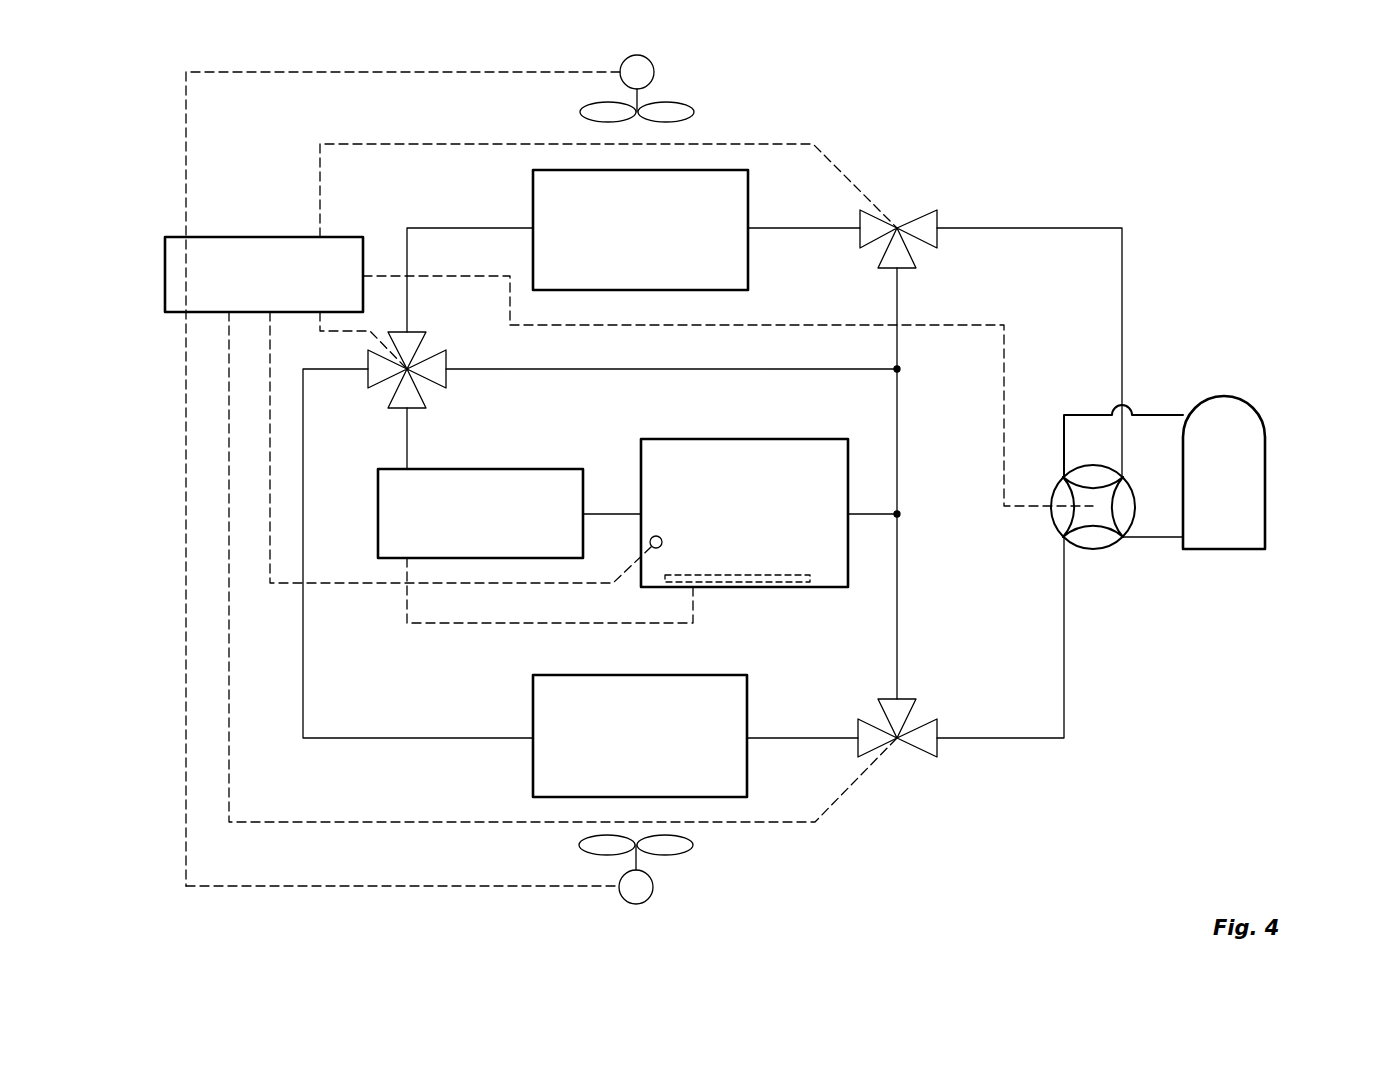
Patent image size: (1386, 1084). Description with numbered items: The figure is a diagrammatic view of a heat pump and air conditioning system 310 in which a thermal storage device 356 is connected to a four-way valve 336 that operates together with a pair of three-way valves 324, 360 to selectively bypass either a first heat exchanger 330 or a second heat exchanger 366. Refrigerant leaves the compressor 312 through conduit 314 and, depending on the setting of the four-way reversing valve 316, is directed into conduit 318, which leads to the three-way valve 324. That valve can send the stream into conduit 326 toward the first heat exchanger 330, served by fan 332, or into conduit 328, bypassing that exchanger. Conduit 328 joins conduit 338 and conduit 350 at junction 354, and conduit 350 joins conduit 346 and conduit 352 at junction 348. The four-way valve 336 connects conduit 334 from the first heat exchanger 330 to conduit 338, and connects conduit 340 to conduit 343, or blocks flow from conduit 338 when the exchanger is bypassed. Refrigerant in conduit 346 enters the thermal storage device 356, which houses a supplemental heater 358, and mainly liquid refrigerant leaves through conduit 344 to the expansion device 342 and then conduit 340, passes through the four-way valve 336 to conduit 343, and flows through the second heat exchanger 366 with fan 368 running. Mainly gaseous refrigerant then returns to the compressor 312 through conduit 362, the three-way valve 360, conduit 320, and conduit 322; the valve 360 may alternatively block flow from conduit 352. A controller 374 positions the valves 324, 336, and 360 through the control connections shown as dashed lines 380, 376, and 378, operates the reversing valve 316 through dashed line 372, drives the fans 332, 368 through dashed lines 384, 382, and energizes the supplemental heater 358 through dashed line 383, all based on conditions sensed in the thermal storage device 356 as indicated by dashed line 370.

The system 310 is at (1106, 214).
The compressor 312 is at (1228, 550).
The conduit 314 is at (1145, 415).
The four-way reversing valve 316 is at (1089, 556).
The conduit 318 is at (1122, 278).
The conduit 320 is at (1064, 690).
The conduit 322 is at (1138, 540).
The three-way valve 324 is at (899, 216).
The conduit 326 is at (815, 228).
The conduit 328 is at (897, 282).
The first heat exchanger 330 is at (748, 244).
The fan 332 is at (666, 87).
The conduit 334 is at (490, 228).
The four-way valve 336 is at (424, 354).
The conduit 338 is at (495, 369).
The conduit 340 is at (407, 455).
The expansion device 342 is at (522, 469).
The conduit 343 is at (330, 372).
The conduit 344 is at (618, 514).
The conduit 346 is at (880, 514).
The junction 348 is at (897, 514).
The conduit 350 is at (897, 450).
The conduit 352 is at (897, 642).
The junction 354 is at (897, 370).
The thermal storage device 356 is at (727, 439).
The supplemental heater 358 is at (775, 575).
The three-way valve 360 is at (918, 717).
The conduit 362 is at (790, 738).
The second heat exchanger 366 is at (727, 675).
The fan 368 is at (668, 882).
The dashed line 370 is at (540, 583).
The dashed line 372 is at (1004, 378).
The controller 374 is at (232, 237).
The dashed line 376 is at (344, 340).
The dashed line 378 is at (317, 822).
The dashed line 380 is at (320, 224).
The dashed line 382 is at (383, 886).
The dashed line 383 is at (448, 623).
The dashed line 384 is at (186, 170).